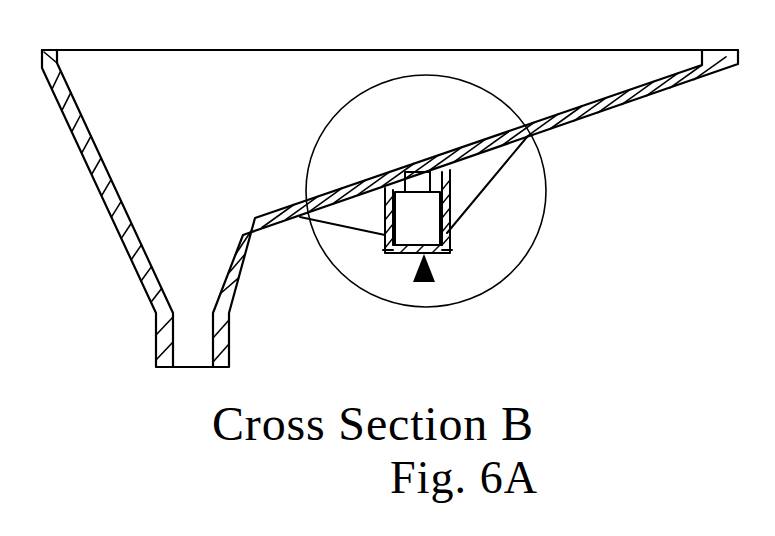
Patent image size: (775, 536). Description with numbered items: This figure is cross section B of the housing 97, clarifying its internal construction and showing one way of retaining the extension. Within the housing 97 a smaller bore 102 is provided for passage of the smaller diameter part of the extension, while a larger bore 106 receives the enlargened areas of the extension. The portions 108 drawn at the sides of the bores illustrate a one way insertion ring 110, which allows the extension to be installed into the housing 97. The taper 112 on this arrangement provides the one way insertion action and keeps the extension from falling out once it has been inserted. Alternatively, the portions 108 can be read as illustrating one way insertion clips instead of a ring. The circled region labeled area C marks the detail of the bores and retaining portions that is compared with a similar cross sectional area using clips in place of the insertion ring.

The housing 97 is at (445, 187).
The smaller bore 102 is at (417, 178).
The larger bore 106 is at (413, 218).
The portions 108 is at (390, 247).
The one way insertion ring 110 is at (424, 282).
The taper 112 is at (401, 252).
The area C is at (562, 151).